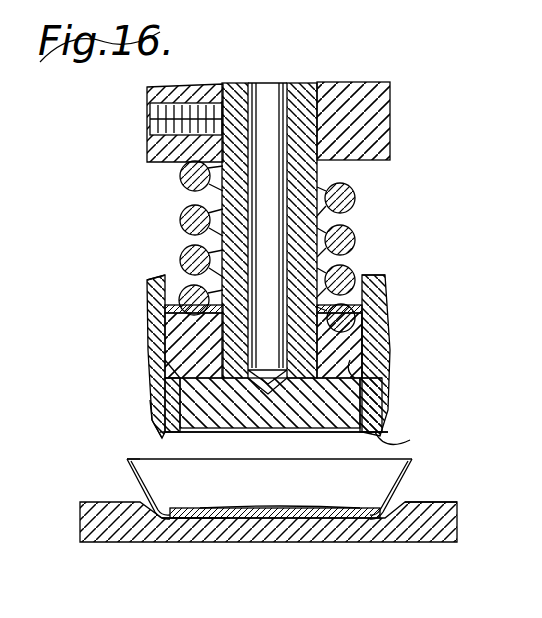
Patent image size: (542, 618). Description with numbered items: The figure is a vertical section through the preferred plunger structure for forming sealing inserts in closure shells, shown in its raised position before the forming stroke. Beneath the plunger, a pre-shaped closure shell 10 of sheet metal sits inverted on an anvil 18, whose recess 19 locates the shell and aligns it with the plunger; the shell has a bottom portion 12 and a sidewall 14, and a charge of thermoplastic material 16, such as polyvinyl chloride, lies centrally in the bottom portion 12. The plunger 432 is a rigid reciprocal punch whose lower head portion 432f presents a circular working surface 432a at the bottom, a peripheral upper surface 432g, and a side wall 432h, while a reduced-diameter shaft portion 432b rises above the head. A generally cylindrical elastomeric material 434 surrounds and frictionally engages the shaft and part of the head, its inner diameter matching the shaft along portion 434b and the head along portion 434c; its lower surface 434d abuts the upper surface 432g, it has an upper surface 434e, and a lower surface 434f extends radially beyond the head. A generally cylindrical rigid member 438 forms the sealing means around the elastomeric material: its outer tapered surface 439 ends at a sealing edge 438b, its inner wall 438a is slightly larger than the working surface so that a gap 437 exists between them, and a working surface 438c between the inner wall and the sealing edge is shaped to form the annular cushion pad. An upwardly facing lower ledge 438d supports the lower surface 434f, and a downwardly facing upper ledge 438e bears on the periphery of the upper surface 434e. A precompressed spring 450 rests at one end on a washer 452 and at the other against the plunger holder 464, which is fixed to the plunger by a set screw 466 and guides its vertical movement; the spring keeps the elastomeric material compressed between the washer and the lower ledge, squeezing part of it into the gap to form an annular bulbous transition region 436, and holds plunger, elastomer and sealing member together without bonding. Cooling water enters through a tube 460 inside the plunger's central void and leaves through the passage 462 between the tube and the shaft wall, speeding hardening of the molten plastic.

The closure shell 10 is at (400, 497).
The bottom portion 12 is at (302, 520).
The sidewall 14 is at (135, 489).
The thermoplastic material 16 is at (267, 520).
The anvil 18 is at (393, 533).
The recess 19 is at (207, 543).
The plunger 432 is at (270, 403).
The working surface 432a is at (302, 434).
The shaft portion 432b is at (300, 86).
The head portion 432f is at (220, 434).
The upper surface 432g is at (163, 372).
The side wall 432h is at (170, 392).
The elastomeric material 434 is at (362, 330).
The portion of elastomeric material 434b is at (372, 310).
The portion of elastomeric material 434c is at (385, 348).
The lower surface 434d is at (385, 373).
The upper surface 434e is at (165, 330).
The lower surface 434f is at (380, 418).
The transition region 436 is at (291, 398).
The gap 437 is at (163, 434).
The rigid member 438 is at (163, 352).
The inner wall 438a is at (343, 434).
The sealing edge 438b is at (158, 440).
The working surface 438c is at (395, 440).
The lower ledge 438d is at (163, 412).
The upper ledge 438e is at (160, 318).
The tapered surface 439 is at (160, 433).
The spring 450 is at (355, 195).
The washer 452 is at (372, 278).
The tube 460 is at (262, 86).
The passage 462 is at (288, 86).
The plunger holder 464 is at (392, 126).
The set screw 466 is at (150, 128).